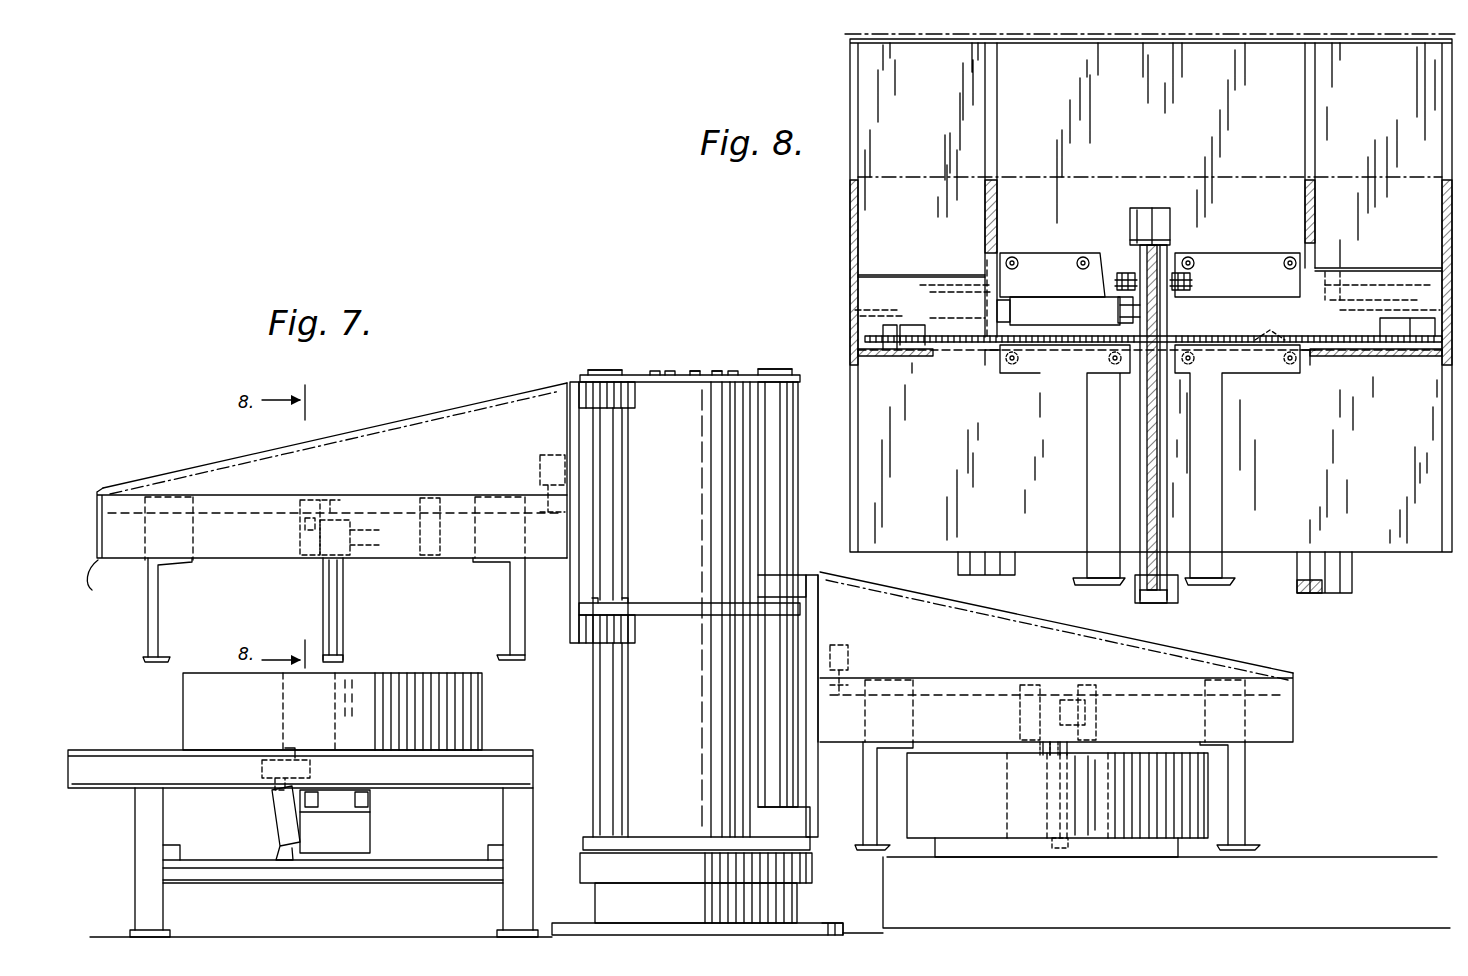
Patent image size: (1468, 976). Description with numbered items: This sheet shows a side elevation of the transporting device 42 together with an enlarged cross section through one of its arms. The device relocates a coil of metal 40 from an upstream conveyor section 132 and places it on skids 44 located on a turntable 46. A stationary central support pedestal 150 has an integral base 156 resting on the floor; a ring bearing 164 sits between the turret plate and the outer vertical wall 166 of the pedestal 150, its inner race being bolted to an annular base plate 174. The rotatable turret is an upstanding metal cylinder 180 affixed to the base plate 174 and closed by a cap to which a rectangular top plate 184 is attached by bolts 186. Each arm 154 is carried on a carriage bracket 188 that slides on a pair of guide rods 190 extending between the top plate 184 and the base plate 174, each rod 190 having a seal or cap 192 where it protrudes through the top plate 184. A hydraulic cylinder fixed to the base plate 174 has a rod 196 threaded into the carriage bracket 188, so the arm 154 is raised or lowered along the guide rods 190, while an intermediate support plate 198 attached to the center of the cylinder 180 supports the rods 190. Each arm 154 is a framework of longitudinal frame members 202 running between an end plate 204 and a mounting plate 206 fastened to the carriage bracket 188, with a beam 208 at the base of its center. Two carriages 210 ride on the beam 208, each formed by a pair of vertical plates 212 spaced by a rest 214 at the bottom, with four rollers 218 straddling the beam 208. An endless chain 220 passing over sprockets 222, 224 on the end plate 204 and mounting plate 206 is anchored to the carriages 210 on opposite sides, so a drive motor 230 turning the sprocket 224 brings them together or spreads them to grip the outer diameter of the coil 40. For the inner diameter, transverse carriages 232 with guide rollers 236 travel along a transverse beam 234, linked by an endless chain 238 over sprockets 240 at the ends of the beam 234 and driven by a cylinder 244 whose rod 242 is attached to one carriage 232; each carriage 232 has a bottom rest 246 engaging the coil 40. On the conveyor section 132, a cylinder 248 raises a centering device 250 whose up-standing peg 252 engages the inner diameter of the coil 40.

In FIG. 7, the coil of metal 40 is at (195, 706).
In FIG. 7, the transporting device 42 is at (602, 292).
In FIG. 7, the skid 44 is at (1130, 852).
In FIG. 7, the turntable 46 is at (1340, 870).
In FIG. 7, the conveyor section 132 is at (132, 800).
In FIG. 7, the support pedestal 150 is at (688, 934).
In FIG. 7, the arm 154 is at (447, 385).
In FIG. 7, the base 156 is at (828, 921).
In FIG. 7, the ring bearing 164 is at (800, 866).
In FIG. 7, the outer vertical wall 166 is at (594, 900).
In FIG. 7, the base plate 174 is at (584, 842).
In FIG. 7, the cylinder 180 is at (688, 707).
In FIG. 7, the top plate 184 is at (690, 383).
In FIG. 7, the bolts 186 is at (700, 370).
In FIG. 7, the carriage bracket 188 is at (575, 380).
In FIG. 7, the guide rods 190 is at (616, 526).
In FIG. 8, the guide rods 190 is at (985, 560).
In FIG. 7, the seal or cap 192 is at (620, 369).
In FIG. 8, the rod 196 is at (1180, 600).
In FIG. 7, the intermediate support plate 198 is at (678, 606).
In FIG. 7, the longitudinal frame members 202 is at (985, 657).
In FIG. 8, the longitudinal frame members 202 is at (990, 110).
In FIG. 7, the end plate 204 is at (1348, 720).
In FIG. 7, the mounting plate 206 is at (566, 412).
In FIG. 8, the mounting plate 206 is at (1382, 452).
In FIG. 8, the beam 208 is at (1160, 322).
In FIG. 7, the carriages 210 is at (168, 615).
In FIG. 8, the carriages 210 is at (1172, 478).
In FIG. 7, the vertical plates 212 is at (512, 604).
In FIG. 8, the vertical plates 212 is at (1148, 440).
In FIG. 7, the rest 214 is at (150, 660).
In FIG. 8, the rest 214 is at (1158, 565).
In FIG. 8, the rollers 218 is at (1143, 250).
In FIG. 7, the endless chain 220 is at (428, 505).
In FIG. 8, the endless chain 220 is at (1122, 272).
In FIG. 7, the sprocket 222 is at (139, 512).
In FIG. 7, the sprocket 224 is at (694, 619).
In FIG. 7, the drive motor 230 is at (540, 456).
In FIG. 8, the drive motor 230 is at (1152, 208).
In FIG. 7, the transverse carriages 232 is at (346, 602).
In FIG. 8, the transverse carriages 232 is at (1060, 372).
In FIG. 7, the transverse beam 234 is at (330, 500).
In FIG. 8, the transverse beam 234 is at (1380, 270).
In FIG. 8, the guide rollers 236 is at (1050, 253).
In FIG. 7, the endless chain 238 is at (1030, 745).
In FIG. 8, the endless chain 238 is at (955, 336).
In FIG. 8, the sprockets 240 is at (908, 325).
In FIG. 7, the rod 242 is at (300, 532).
In FIG. 8, the rod 242 is at (1070, 315).
In FIG. 8, the cylinder 244 is at (1000, 300).
In FIG. 7, the bottom rest 246 is at (346, 652).
In FIG. 8, the bottom rest 246 is at (1077, 575).
In FIG. 7, the cylinder 248 is at (276, 818).
In FIG. 7, the centering device 250 is at (270, 760).
In FIG. 7, the peg 252 is at (300, 745).